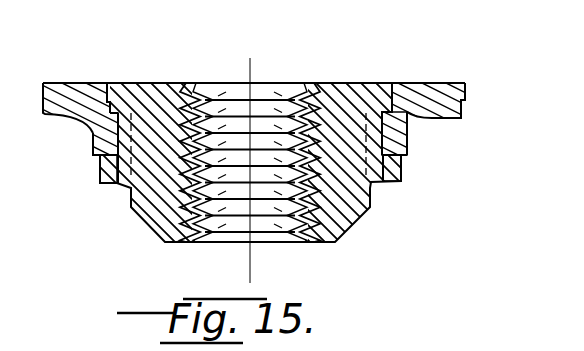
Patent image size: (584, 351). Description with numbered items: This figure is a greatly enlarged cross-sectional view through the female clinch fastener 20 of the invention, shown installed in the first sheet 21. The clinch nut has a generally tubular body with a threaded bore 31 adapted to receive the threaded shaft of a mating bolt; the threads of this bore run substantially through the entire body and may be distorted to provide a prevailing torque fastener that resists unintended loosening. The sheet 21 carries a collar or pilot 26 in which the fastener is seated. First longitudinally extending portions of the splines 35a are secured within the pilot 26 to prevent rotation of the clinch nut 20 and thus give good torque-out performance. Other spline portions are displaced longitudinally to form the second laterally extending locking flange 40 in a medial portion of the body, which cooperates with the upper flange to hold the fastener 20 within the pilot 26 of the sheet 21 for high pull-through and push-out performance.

The female clinch fastener 20 is at (292, 175).
The first sheet 21 is at (420, 97).
The pilot 26 is at (387, 127).
The threaded bore 31 is at (206, 121).
The first longitudinally extending portions of the splines 35a is at (127, 125).
The second laterally extending locking flange 40 is at (88, 178).